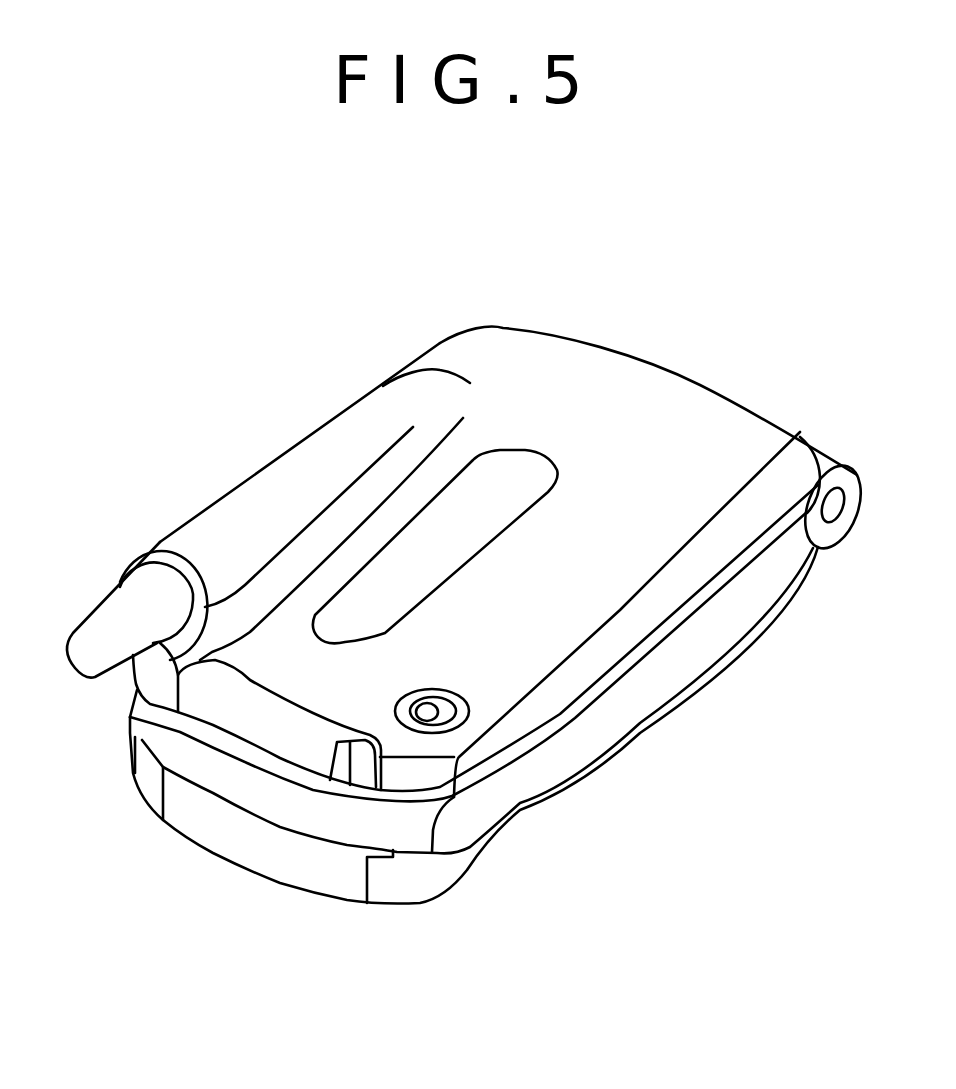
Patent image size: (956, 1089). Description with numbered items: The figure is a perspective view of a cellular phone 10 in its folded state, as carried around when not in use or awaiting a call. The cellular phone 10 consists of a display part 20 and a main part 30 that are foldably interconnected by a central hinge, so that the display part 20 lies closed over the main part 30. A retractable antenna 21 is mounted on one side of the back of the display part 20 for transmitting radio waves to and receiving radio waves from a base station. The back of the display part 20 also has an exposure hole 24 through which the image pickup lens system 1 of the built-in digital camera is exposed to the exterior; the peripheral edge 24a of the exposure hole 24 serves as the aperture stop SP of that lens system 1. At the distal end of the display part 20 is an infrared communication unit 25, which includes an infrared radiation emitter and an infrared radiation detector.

The cellular phone 10 is at (175, 330).
The display part 20 is at (653, 552).
The retractable antenna 21 is at (102, 620).
The exposure hole 24 is at (428, 703).
The peripheral edge 24a is at (435, 715).
The infrared communication unit 25 is at (333, 757).
The main part 30 is at (550, 770).
The image pickup lens system 1 is at (465, 693).